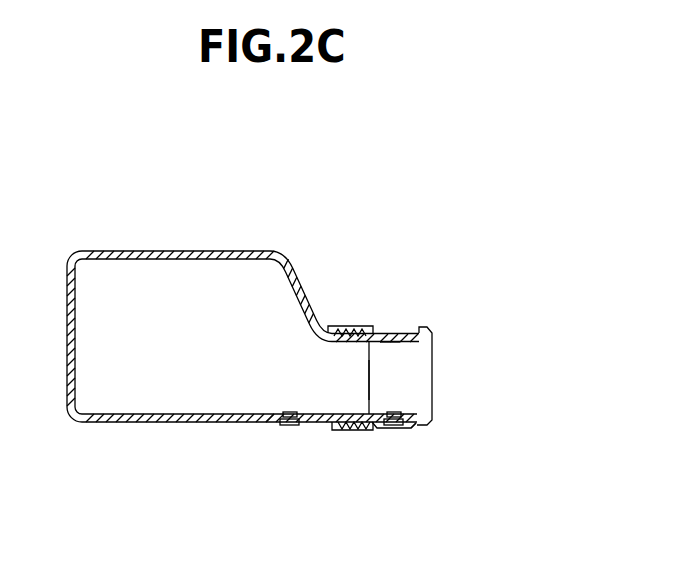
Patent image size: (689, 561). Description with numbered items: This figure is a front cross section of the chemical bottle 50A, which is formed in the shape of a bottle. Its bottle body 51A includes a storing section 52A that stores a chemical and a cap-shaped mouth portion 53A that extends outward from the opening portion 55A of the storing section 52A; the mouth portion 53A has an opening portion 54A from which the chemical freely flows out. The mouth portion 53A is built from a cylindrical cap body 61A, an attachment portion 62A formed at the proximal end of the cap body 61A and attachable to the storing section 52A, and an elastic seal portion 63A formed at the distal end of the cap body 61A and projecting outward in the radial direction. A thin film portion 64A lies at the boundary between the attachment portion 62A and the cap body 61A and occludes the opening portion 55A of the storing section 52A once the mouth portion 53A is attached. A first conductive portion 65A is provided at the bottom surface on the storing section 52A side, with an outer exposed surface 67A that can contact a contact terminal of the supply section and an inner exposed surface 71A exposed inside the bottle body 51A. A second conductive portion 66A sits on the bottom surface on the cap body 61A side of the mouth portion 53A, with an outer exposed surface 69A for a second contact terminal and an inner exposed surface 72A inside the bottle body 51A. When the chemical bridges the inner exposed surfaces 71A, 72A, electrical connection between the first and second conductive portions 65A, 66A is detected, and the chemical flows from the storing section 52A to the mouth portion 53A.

The chemical bottle 50A is at (114, 172).
The bottle body 51A is at (558, 225).
The storing section 52A is at (302, 292).
The mouth portion 53A is at (402, 332).
The opening portion 54A is at (433, 355).
The opening portion 55A is at (353, 388).
The cap body 61A is at (413, 385).
The attachment portion 62A is at (343, 336).
The seal portion 63A is at (418, 428).
The thin film portion 64A is at (362, 424).
The first conductive portion 65A is at (266, 405).
The second conductive portion 66A is at (410, 434).
The outer exposed surface 67A is at (283, 425).
The outer exposed surface 69A is at (395, 430).
The inner exposed surface 71A is at (288, 412).
The inner exposed surface 72A is at (400, 416).